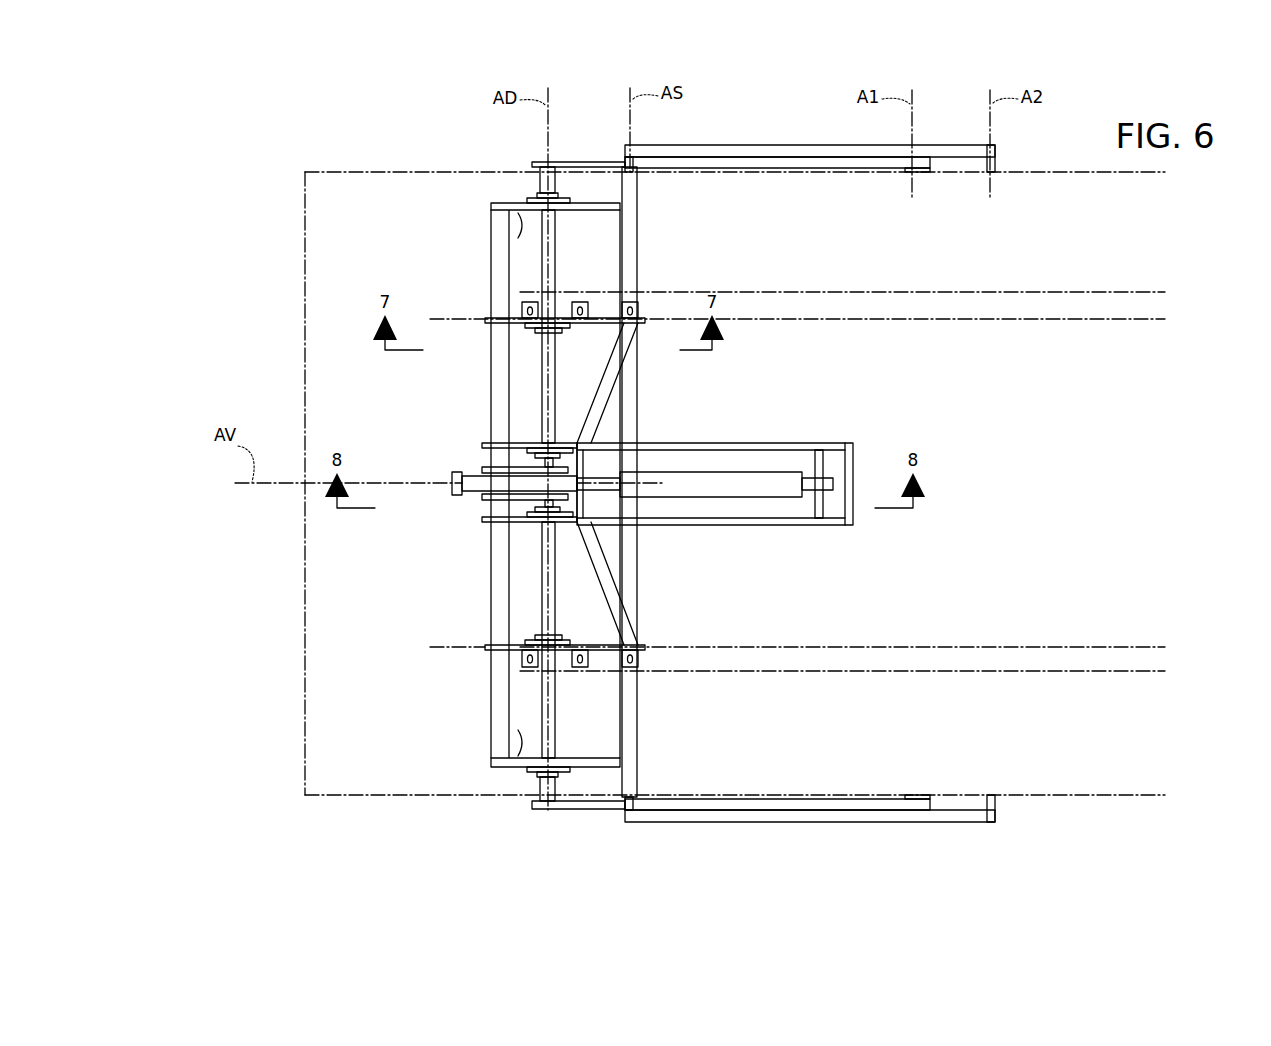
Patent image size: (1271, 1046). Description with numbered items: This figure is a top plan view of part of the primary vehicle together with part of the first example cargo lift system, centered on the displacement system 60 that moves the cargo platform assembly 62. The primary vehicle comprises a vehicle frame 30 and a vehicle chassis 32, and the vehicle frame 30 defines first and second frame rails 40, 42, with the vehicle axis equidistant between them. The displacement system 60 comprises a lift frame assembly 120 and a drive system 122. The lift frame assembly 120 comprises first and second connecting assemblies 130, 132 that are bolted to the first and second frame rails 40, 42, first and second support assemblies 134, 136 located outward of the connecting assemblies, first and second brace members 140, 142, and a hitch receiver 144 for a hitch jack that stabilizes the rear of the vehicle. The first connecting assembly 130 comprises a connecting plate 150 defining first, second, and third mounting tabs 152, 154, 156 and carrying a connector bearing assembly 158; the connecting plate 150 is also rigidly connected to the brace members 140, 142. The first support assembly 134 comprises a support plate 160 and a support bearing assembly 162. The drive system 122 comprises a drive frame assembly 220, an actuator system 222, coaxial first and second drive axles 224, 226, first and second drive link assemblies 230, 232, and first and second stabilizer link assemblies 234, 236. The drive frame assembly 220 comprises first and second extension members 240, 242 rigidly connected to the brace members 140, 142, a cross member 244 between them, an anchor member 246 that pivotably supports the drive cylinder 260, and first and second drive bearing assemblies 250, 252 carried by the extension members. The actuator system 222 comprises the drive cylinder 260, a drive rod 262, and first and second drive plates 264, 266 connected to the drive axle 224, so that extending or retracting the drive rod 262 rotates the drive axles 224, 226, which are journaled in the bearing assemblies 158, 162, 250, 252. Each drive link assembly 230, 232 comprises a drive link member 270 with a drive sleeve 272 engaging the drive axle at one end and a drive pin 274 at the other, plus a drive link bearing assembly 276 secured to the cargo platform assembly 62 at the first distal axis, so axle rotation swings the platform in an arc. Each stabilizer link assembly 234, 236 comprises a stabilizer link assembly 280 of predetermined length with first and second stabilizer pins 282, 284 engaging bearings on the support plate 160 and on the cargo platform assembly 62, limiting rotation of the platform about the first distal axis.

The vehicle frame 30 is at (862, 290).
The vehicle chassis 32 is at (922, 290).
The first frame rail 40 is at (968, 290).
The second frame rail 42 is at (965, 645).
The displacement system 60 is at (430, 647).
The cargo platform assembly 62 is at (303, 367).
The lift frame assembly 120 is at (505, 814).
The drive system 122 is at (838, 418).
The first connecting assembly 130 is at (486, 320).
The second connecting assembly 132 is at (486, 648).
The first support assembly 134 is at (489, 208).
The second support assembly 136 is at (489, 760).
The first brace member 140 is at (500, 382).
The second brace member 142 is at (637, 262).
The hitch receiver 144 is at (460, 480).
The connecting plate 150 is at (565, 333).
The first mounting tab 152 is at (528, 302).
The second mounting tab 154 is at (580, 302).
The third mounting tab 156 is at (638, 310).
The connector bearing assembly 158 is at (604, 340).
The support plate 160 is at (518, 222).
The support bearing assembly 162 is at (530, 200).
The drive frame assembly 220 is at (846, 436).
The actuator system 222 is at (735, 470).
The first drive axle 224 is at (545, 404).
The second drive axle 226 is at (522, 544).
The first drive link assembly 230 is at (755, 168).
The second drive link assembly 232 is at (755, 799).
The first stabilizer link assembly 234 is at (718, 145).
The second stabilizer link assembly 236 is at (718, 824).
The first extension member 240 is at (690, 444).
The second extension member 242 is at (690, 524).
The cross member 244 is at (853, 478).
The anchor member 246 is at (821, 500).
The first drive bearing assembly 250 is at (520, 445).
The second drive bearing assembly 252 is at (520, 520).
The drive cylinder 260 is at (740, 488).
The drive rod 262 is at (610, 492).
The first drive plate 264 is at (522, 468).
The second drive plate 266 is at (522, 498).
The drive link member 270 is at (810, 168).
The drive sleeve 272 is at (545, 180).
The drive pin 274 is at (918, 172).
The drive link bearing assembly 276 is at (912, 795).
The stabilizer link assembly 280 is at (760, 157).
The first stabilizer pin 282 is at (616, 160).
The second stabilizer pin 284 is at (996, 160).